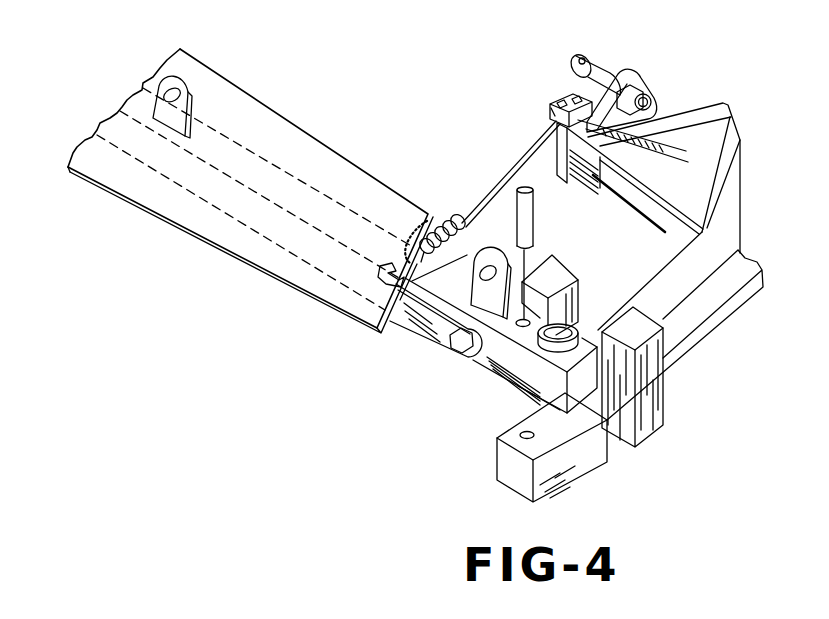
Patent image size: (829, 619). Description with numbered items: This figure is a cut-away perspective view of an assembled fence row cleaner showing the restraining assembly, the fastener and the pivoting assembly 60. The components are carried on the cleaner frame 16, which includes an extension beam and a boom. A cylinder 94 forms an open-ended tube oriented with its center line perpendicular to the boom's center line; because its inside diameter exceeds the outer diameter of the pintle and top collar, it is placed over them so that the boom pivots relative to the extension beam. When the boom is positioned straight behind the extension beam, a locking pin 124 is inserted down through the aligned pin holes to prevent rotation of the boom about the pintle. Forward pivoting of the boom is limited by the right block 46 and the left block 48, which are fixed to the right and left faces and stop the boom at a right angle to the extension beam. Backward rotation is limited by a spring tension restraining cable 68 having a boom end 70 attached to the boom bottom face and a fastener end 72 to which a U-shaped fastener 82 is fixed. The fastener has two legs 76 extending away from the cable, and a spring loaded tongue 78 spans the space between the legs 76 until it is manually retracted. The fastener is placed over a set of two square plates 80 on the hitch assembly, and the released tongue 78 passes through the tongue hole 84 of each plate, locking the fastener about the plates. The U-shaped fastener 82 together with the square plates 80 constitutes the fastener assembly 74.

The cleaner frame 16 is at (707, 305).
The right block 46 is at (562, 275).
The left block 48 is at (665, 398).
The pivoting assembly 60 is at (580, 467).
The restraining cable 68 is at (466, 116).
The boom end 70 is at (378, 275).
The fastener end 72 is at (526, 150).
The fastener assembly 74 is at (532, 106).
The leg 76 is at (653, 116).
The spring loaded tongue 78 is at (584, 118).
The set of two square plates 80 is at (643, 127).
The U-shaped fastener 82 is at (548, 108).
The tongue hole 84 is at (606, 182).
The cylinder 94 is at (578, 318).
The locking pin 124 is at (512, 208).